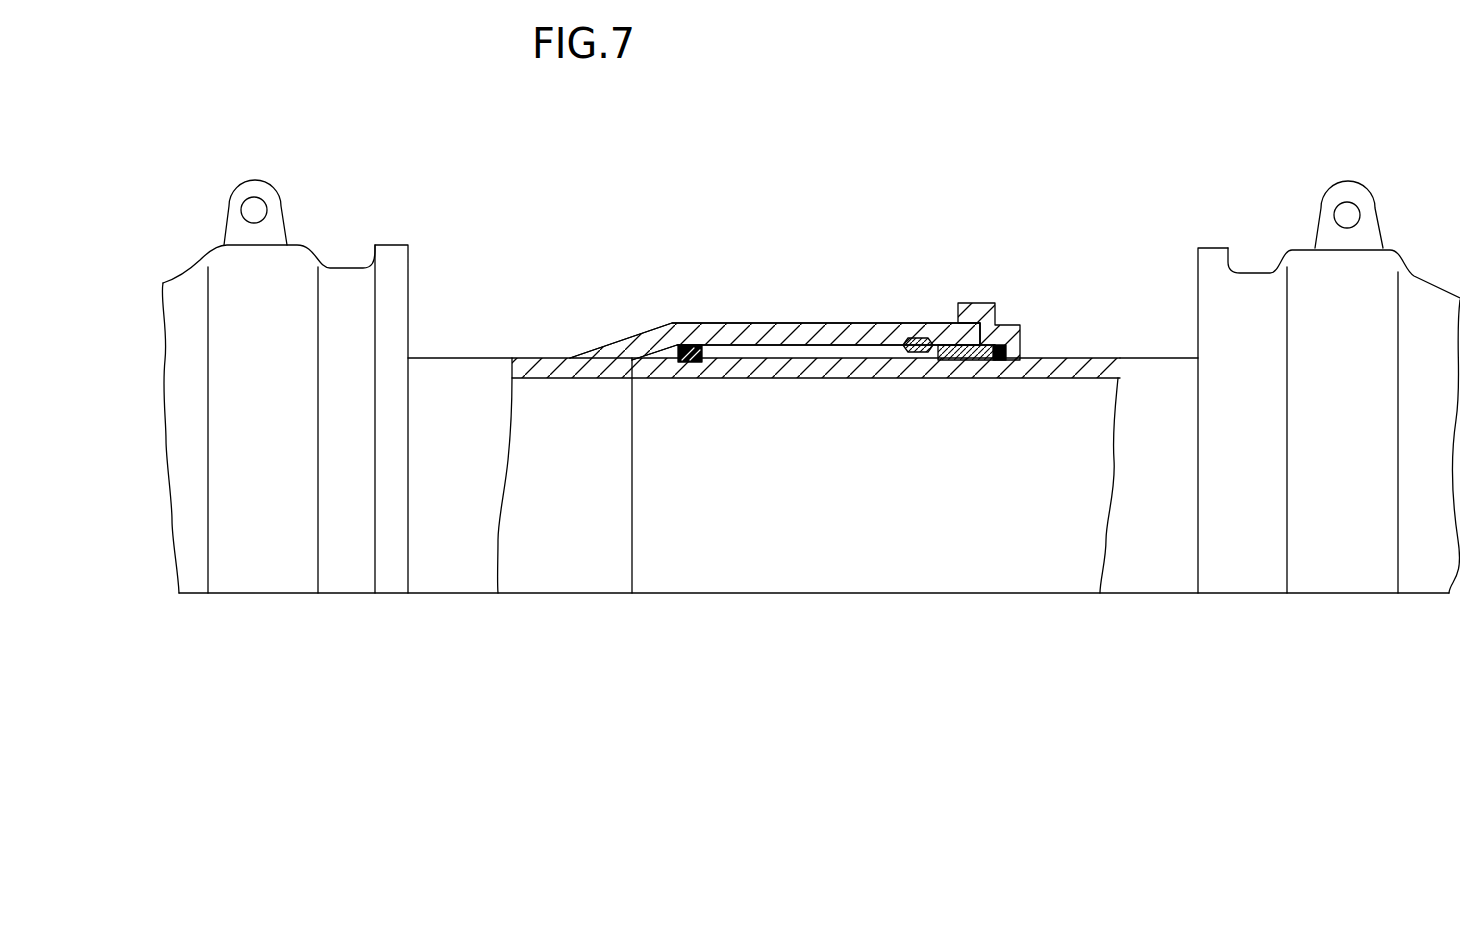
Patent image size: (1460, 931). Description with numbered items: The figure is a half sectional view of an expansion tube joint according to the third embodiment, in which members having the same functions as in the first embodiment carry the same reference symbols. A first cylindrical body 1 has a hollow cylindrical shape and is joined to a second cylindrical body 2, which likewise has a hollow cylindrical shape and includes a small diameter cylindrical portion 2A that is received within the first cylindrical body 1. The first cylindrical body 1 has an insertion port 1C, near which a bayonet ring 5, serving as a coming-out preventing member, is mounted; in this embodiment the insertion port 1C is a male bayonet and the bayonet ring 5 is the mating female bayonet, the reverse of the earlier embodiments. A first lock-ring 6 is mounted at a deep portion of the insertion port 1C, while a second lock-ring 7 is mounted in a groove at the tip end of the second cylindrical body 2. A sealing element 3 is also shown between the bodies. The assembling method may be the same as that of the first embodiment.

The first cylindrical body 1 is at (468, 358).
The insertion port 1C is at (1000, 361).
The second cylindrical body 2 is at (1103, 358).
The small diameter cylindrical portion 2A is at (783, 379).
The seal ring 3 is at (966, 361).
The bayonet ring 5 is at (1005, 323).
The first lock-ring 6 is at (918, 338).
The second lock-ring 7 is at (693, 363).